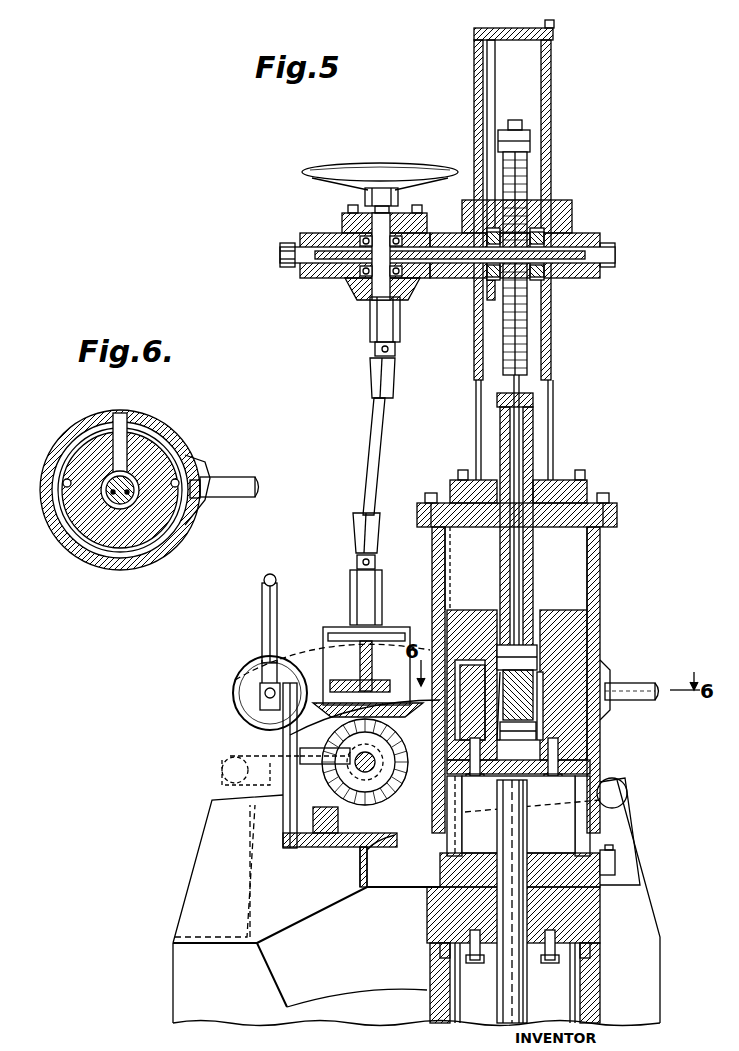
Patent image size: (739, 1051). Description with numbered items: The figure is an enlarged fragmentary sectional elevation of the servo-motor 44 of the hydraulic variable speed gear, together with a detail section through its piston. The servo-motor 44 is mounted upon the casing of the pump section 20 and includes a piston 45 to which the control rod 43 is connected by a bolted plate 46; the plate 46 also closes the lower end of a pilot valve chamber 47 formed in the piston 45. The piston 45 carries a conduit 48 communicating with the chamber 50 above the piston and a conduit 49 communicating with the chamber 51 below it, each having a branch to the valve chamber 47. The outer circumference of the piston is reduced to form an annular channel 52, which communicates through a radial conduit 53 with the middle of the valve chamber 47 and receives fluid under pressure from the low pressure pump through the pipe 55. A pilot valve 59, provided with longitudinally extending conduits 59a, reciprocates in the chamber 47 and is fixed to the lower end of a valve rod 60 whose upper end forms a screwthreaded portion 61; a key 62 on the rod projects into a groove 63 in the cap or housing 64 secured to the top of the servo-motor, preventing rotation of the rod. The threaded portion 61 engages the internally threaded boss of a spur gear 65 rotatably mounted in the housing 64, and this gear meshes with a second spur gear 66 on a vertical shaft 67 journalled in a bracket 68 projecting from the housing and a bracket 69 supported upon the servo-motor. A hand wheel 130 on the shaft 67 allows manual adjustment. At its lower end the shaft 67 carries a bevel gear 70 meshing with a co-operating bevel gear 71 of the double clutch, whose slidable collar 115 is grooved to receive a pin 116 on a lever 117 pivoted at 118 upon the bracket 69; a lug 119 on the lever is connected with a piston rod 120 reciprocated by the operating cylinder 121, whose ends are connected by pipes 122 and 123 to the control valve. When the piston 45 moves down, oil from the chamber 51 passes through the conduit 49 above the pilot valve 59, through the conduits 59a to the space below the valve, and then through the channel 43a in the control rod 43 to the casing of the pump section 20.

In FIG. 5, the pump section 20 is at (360, 990).
In FIG. 5, the control rod 43 is at (527, 843).
In FIG. 5, the channel 43a is at (580, 905).
In FIG. 5, the servo-motor 44 is at (601, 582).
In FIG. 6, the servo-motor 44 is at (68, 555).
In FIG. 5, the piston 45 is at (600, 742).
In FIG. 6, the piston 45 is at (116, 548).
In FIG. 5, the plate 46 is at (525, 815).
In FIG. 5, the pilot valve chamber 47 is at (540, 650).
In FIG. 6, the pilot valve chamber 47 is at (140, 478).
In FIG. 5, the conduit 48 is at (560, 673).
In FIG. 5, the conduit 49 is at (475, 795).
In FIG. 5, the chamber 50 is at (575, 552).
In FIG. 5, the chamber 51 is at (625, 812).
In FIG. 6, the annular channel 52 is at (163, 550).
In FIG. 6, the radial conduit 53 is at (132, 435).
In FIG. 5, the pipe 55 is at (650, 698).
In FIG. 6, the pipe 55 is at (248, 497).
In FIG. 5, the pilot valve 59 is at (545, 690).
In FIG. 5, the longitudinally extending conduits 59a is at (600, 721).
In FIG. 5, the valve rod 60 is at (534, 440).
In FIG. 5, the screwthreaded portion 61 is at (528, 180).
In FIG. 5, the key 62 is at (498, 136).
In FIG. 5, the groove 63 is at (488, 88).
In FIG. 5, the cap or housing 64 is at (551, 78).
In FIG. 5, the spur gear 65 is at (578, 238).
In FIG. 5, the second spur gear 66 is at (330, 278).
In FIG. 5, the vertical shaft 67 is at (370, 460).
In FIG. 5, the bracket 68 is at (365, 298).
In FIG. 5, the bracket 69 is at (330, 632).
In FIG. 5, the bevel gear 70 is at (290, 733).
In FIG. 5, the bevel gear 71 is at (393, 793).
In FIG. 5, the slidable collar 115 is at (383, 758).
In FIG. 5, the pin 116 is at (310, 825).
In FIG. 5, the lever 117 is at (300, 757).
In FIG. 5, the pivot 118 is at (283, 830).
In FIG. 5, the lug 119 is at (265, 672).
In FIG. 5, the piston rod 120 is at (262, 698).
In FIG. 5, the operating cylinder 121 is at (240, 695).
In FIG. 5, the pipe 122 is at (263, 582).
In FIG. 5, the pipe 123 is at (262, 617).
In FIG. 5, the hand wheel 130 is at (395, 156).